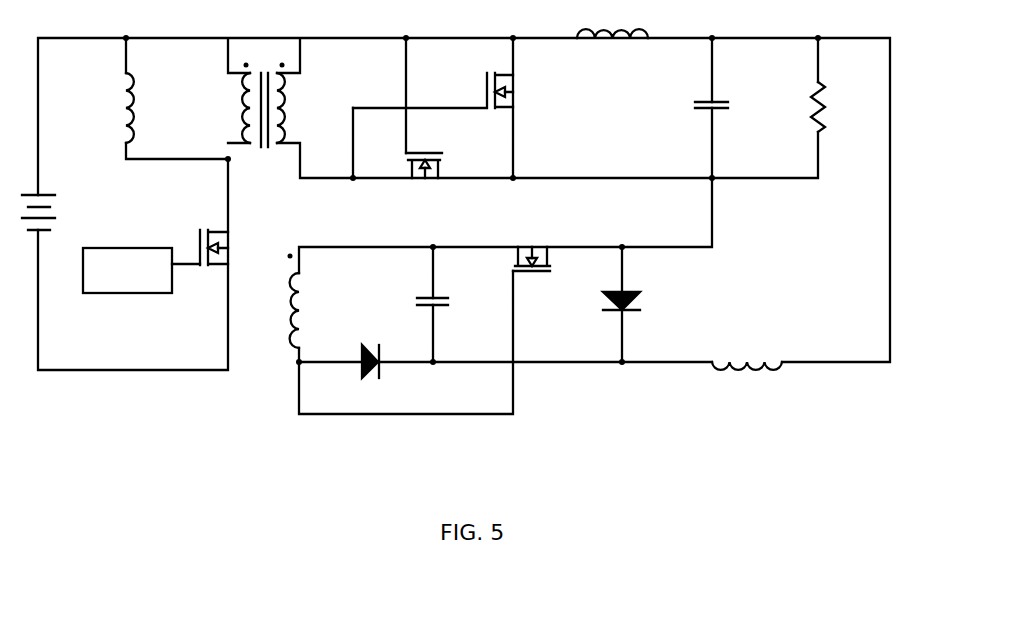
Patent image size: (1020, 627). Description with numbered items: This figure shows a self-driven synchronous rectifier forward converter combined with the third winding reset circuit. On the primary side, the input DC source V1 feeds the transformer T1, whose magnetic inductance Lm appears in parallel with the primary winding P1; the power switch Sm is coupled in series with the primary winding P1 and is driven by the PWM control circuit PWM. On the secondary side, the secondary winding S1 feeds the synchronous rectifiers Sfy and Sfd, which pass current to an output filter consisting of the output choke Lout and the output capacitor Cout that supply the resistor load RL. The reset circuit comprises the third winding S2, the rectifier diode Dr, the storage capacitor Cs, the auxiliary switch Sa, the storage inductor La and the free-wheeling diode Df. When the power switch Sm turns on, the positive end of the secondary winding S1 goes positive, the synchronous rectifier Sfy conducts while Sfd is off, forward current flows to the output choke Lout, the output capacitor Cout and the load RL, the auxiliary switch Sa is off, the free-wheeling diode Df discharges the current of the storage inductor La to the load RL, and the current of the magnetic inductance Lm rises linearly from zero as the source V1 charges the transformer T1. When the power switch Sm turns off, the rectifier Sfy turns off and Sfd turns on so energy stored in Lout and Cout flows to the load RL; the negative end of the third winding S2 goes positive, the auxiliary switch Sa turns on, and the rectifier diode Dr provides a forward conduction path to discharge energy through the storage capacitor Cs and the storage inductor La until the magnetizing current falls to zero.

The input DC source V1 is at (55, 207).
The magnetic inductance Lm is at (155, 98).
The primary winding P1 is at (225, 108).
The transformer T1 is at (259, 126).
The secondary winding S1 is at (299, 108).
The PWM control circuit PWM is at (127, 270).
The power switch Sm is at (237, 251).
The synchronous rectifier Sfd is at (457, 93).
The synchronous rectifier Sfy is at (424, 186).
The output choke Lout is at (612, 20).
The output capacitor Cout is at (739, 100).
The resistor load RL is at (837, 107).
The third winding S2 is at (314, 310).
The storage capacitor Cs is at (448, 310).
The rectifier diode Dr is at (365, 378).
The auxiliary switch Sa is at (535, 247).
The free-wheeling diode Df is at (639, 300).
The storage inductor La is at (747, 352).